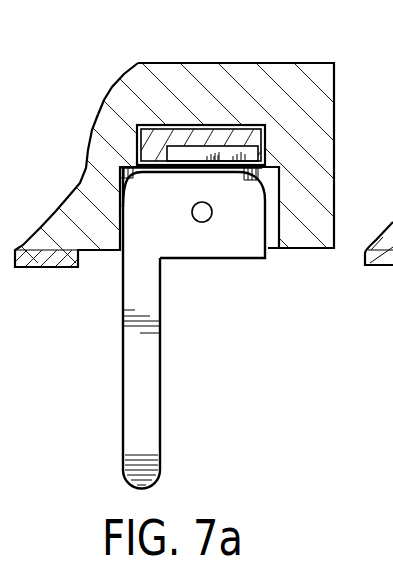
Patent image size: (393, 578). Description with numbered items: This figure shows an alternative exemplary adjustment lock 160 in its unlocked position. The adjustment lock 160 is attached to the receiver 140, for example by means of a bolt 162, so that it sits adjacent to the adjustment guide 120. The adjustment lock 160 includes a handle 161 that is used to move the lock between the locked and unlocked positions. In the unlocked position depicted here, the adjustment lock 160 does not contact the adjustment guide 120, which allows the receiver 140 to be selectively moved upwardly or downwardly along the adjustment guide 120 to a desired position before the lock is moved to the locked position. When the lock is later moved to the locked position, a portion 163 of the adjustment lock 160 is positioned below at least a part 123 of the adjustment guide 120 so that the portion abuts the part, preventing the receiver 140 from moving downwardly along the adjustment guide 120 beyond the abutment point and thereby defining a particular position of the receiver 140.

The adjustment guide 120 is at (186, 140).
The part of adjustment guide 123 is at (243, 157).
The receiver 140 is at (315, 105).
The adjustment lock 160 is at (170, 223).
The handle 161 is at (138, 430).
The bolt 162 is at (206, 217).
The portion of adjustment lock 163 is at (216, 162).